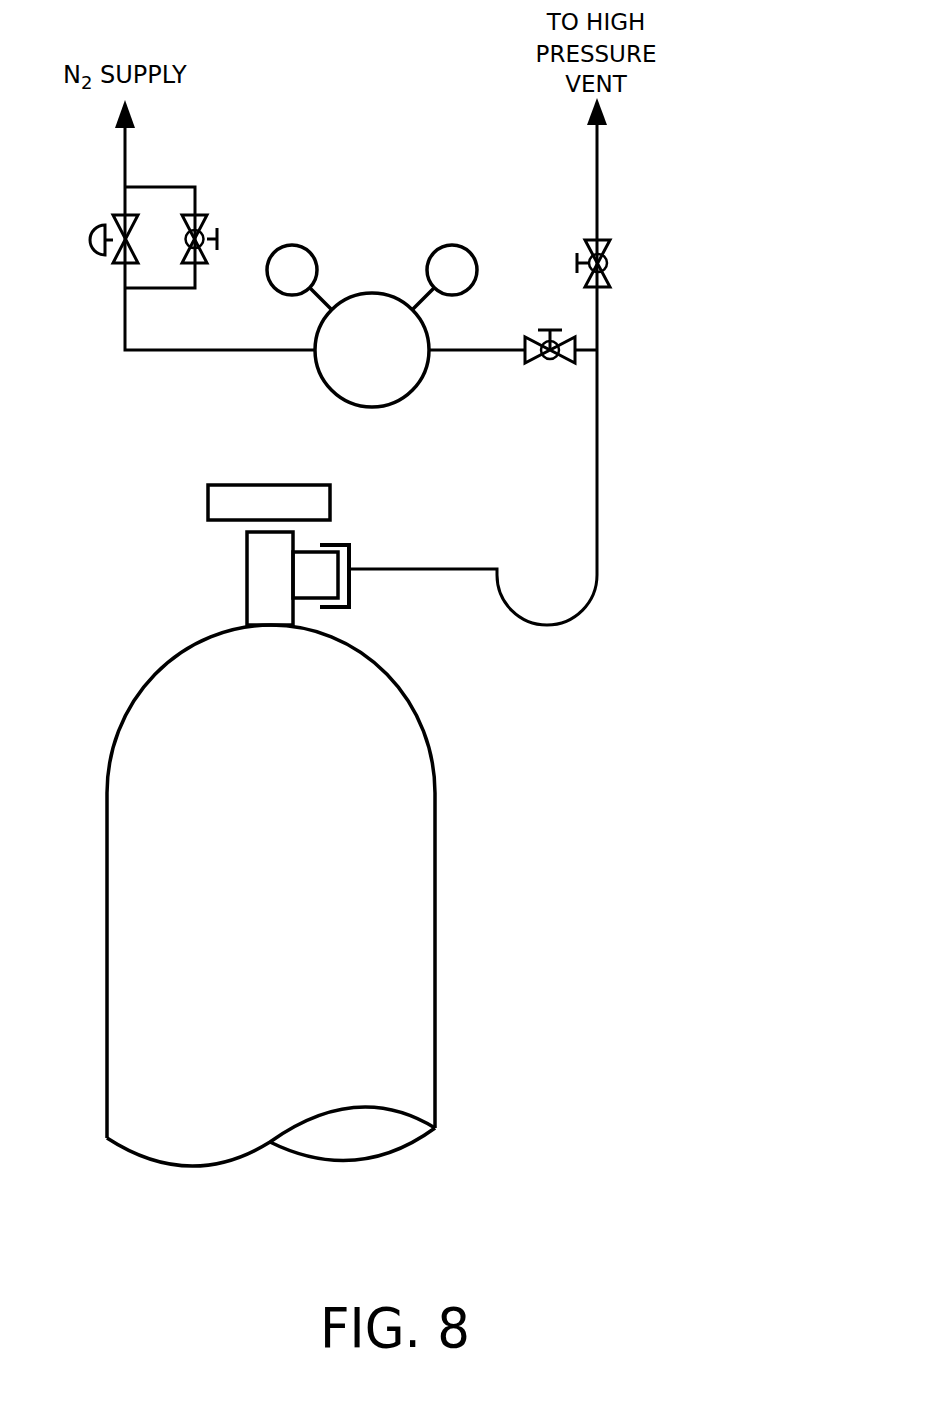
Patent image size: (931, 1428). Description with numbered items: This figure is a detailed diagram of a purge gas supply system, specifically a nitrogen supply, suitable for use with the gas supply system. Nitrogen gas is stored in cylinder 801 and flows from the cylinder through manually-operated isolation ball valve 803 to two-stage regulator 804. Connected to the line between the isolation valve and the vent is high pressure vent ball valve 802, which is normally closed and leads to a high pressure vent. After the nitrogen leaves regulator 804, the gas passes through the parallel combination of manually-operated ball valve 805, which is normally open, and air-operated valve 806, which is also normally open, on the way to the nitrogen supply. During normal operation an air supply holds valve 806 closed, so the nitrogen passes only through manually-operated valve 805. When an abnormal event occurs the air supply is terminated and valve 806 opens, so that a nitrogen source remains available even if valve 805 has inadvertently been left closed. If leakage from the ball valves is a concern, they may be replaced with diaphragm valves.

The cylinder 801 is at (440, 798).
The high pressure vent ball valve 802 is at (609, 263).
The manually-operated isolation ball valve 803 is at (552, 365).
The two-stage regulator 804 is at (310, 372).
The manually-operated ball valve 805 is at (217, 232).
The air-operated valve 806 is at (88, 236).